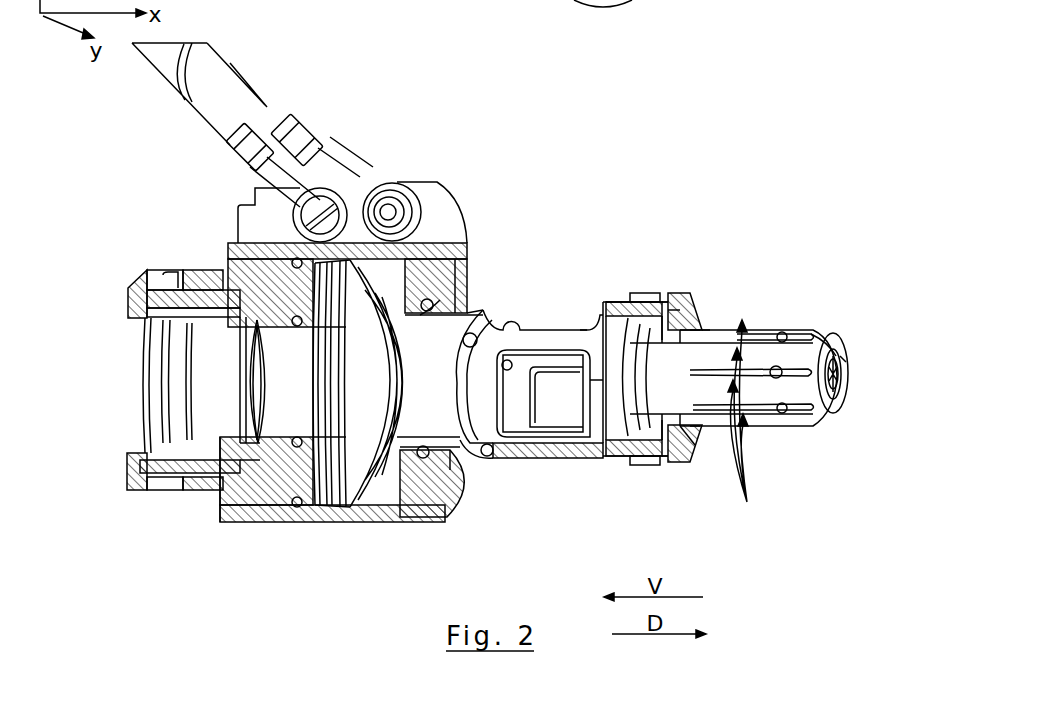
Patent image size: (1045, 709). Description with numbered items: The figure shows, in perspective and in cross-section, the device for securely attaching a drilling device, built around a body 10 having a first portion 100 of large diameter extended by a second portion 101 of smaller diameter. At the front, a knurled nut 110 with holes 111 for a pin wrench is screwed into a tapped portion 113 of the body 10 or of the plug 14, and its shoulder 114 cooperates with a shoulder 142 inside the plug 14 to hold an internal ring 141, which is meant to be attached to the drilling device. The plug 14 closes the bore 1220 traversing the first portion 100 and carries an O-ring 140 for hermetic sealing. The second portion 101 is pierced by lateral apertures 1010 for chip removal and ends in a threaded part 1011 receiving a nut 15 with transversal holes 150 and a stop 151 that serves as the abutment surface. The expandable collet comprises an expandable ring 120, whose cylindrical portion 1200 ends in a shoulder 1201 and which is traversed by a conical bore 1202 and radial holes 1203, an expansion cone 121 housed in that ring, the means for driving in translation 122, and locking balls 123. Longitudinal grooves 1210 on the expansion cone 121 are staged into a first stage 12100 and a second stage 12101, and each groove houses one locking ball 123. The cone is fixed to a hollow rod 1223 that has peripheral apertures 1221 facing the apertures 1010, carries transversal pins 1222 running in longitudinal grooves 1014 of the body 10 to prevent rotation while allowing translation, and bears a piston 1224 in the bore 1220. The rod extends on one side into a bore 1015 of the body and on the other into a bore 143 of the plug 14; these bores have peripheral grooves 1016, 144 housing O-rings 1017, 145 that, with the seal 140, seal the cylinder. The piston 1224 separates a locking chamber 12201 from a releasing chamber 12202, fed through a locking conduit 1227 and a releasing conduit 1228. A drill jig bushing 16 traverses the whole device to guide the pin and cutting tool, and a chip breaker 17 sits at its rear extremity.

The body 10 is at (390, 487).
The plug 14 is at (235, 252).
The nut 15 is at (682, 292).
The drill jig bushing 16 is at (848, 375).
The chip breaker 17 is at (850, 358).
The first portion 100 is at (296, 552).
The second portion 101 is at (608, 495).
The knurled nut 110 is at (150, 470).
The holes 111 is at (172, 270).
The tapped portion 113 is at (195, 490).
The shoulder 114 is at (136, 480).
The expandable ring 120 is at (762, 330).
The expansion cone 121 is at (837, 330).
The means for driving in translation 122 is at (434, 146).
The locking balls 123 is at (797, 330).
The O-ring 140 is at (245, 480).
The internal ring 141 is at (173, 431).
The shoulder 142 is at (233, 312).
The bore 143 is at (237, 500).
The peripheral groove 144 is at (247, 340).
The O-ring 145 is at (266, 505).
The transversal holes 150 is at (665, 295).
The stop 151 is at (703, 328).
The apertures 1010 is at (530, 300).
The threaded part 1011 is at (622, 300).
The longitudinal groove 1014 is at (462, 470).
The bore 1015 is at (470, 300).
The peripheral groove 1016 is at (484, 305).
The O-ring 1017 is at (452, 455).
The portion with cylindrical external outline 1200 is at (694, 462).
The shoulder 1201 is at (673, 293).
The conical bore 1202 is at (720, 330).
The radial holes 1203 is at (813, 330).
The longitudinal grooves 1210 is at (752, 426).
The bore 1220 is at (458, 285).
The peripheral apertures 1221 is at (571, 318).
The transversal pins 1222 is at (477, 335).
The hollow rod 1223 is at (587, 324).
The piston 1224 is at (408, 512).
The locking conduit 1227 is at (356, 172).
The releasing conduit 1228 is at (252, 175).
The first stage 12100 is at (783, 331).
The second stage 12101 is at (823, 330).
The locking chamber 12201 is at (374, 180).
The releasing chamber 12202 is at (325, 490).